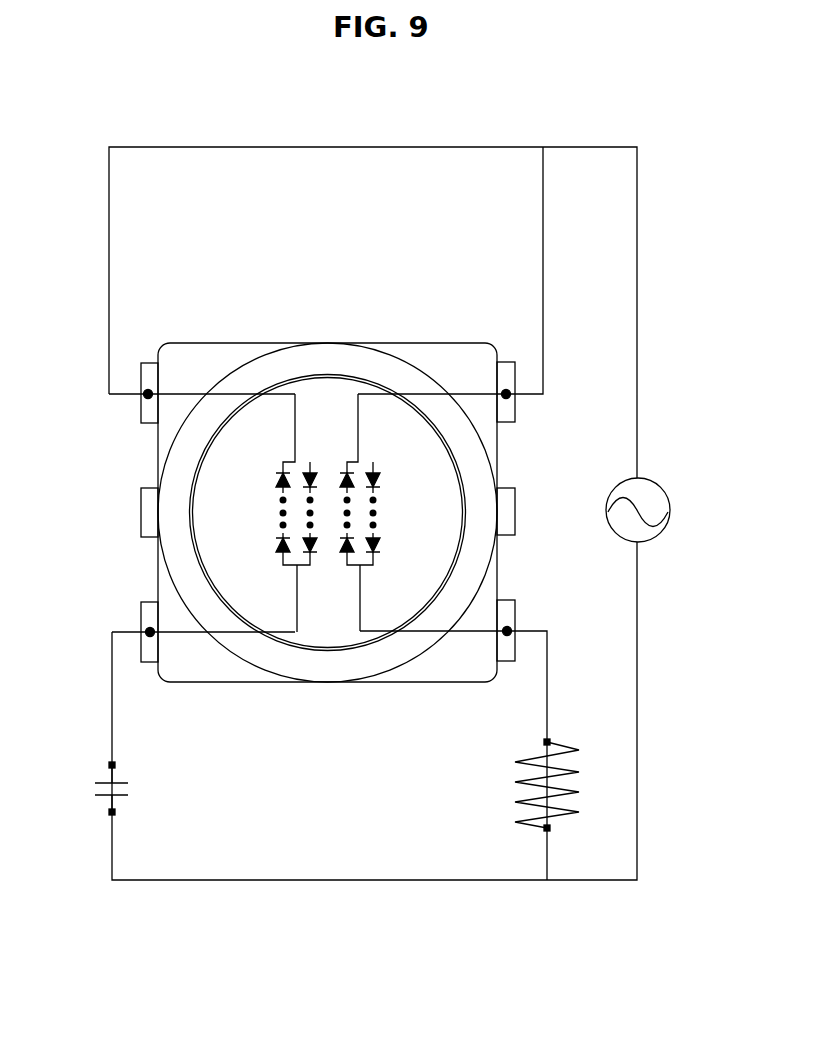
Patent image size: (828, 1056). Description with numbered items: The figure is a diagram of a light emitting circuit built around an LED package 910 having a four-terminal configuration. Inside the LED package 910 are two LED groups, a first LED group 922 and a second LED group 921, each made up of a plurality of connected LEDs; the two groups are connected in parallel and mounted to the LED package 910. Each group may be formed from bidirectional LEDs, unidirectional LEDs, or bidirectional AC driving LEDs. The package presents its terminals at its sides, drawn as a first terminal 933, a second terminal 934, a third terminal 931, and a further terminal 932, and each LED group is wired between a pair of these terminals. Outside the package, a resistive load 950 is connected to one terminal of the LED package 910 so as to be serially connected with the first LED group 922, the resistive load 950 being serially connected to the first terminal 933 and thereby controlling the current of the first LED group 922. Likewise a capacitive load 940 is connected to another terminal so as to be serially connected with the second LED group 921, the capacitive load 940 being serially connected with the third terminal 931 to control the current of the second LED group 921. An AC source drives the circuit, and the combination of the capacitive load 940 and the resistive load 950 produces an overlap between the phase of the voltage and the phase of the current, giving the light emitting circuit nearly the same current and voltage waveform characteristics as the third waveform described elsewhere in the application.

The LED package 910 is at (270, 342).
The second LED group 921 is at (283, 460).
The first LED group 922 is at (373, 460).
The third terminal 931 is at (148, 380).
The second terminal 932 is at (148, 615).
The first terminal 933 is at (507, 375).
The second terminal 934 is at (508, 613).
The capacitive load 940 is at (92, 787).
The resistive load 950 is at (605, 786).